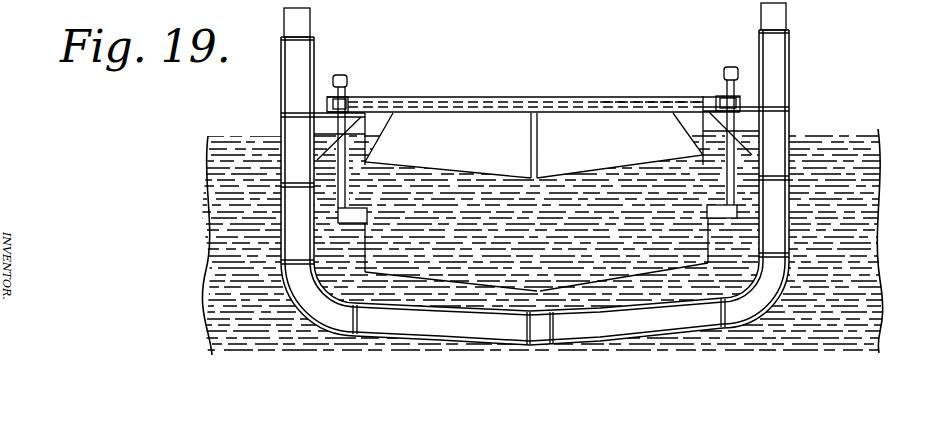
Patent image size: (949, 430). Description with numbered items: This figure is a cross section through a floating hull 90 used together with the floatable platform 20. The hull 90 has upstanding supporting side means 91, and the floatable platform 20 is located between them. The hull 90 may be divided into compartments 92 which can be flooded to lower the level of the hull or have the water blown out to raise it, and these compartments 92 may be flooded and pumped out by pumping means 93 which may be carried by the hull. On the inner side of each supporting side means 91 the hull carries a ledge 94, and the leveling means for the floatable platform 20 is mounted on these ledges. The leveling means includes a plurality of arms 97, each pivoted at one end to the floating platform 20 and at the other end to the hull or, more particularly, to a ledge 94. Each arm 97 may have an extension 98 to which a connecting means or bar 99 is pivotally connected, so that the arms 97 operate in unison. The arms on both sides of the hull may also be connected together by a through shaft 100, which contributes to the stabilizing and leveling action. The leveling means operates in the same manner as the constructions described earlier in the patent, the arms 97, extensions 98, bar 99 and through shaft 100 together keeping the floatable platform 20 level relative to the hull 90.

The floatable platform 20 is at (508, 110).
The floating hull 90 is at (298, 305).
The upstanding supporting side means 91 is at (281, 114).
The compartments 92 is at (295, 278).
The pumping means 93 is at (305, 22).
The ledge 94 is at (320, 112).
The arms 97 is at (347, 183).
The extension 98 is at (347, 94).
The connecting bar 99 is at (340, 73).
The through shaft 100 is at (638, 97).